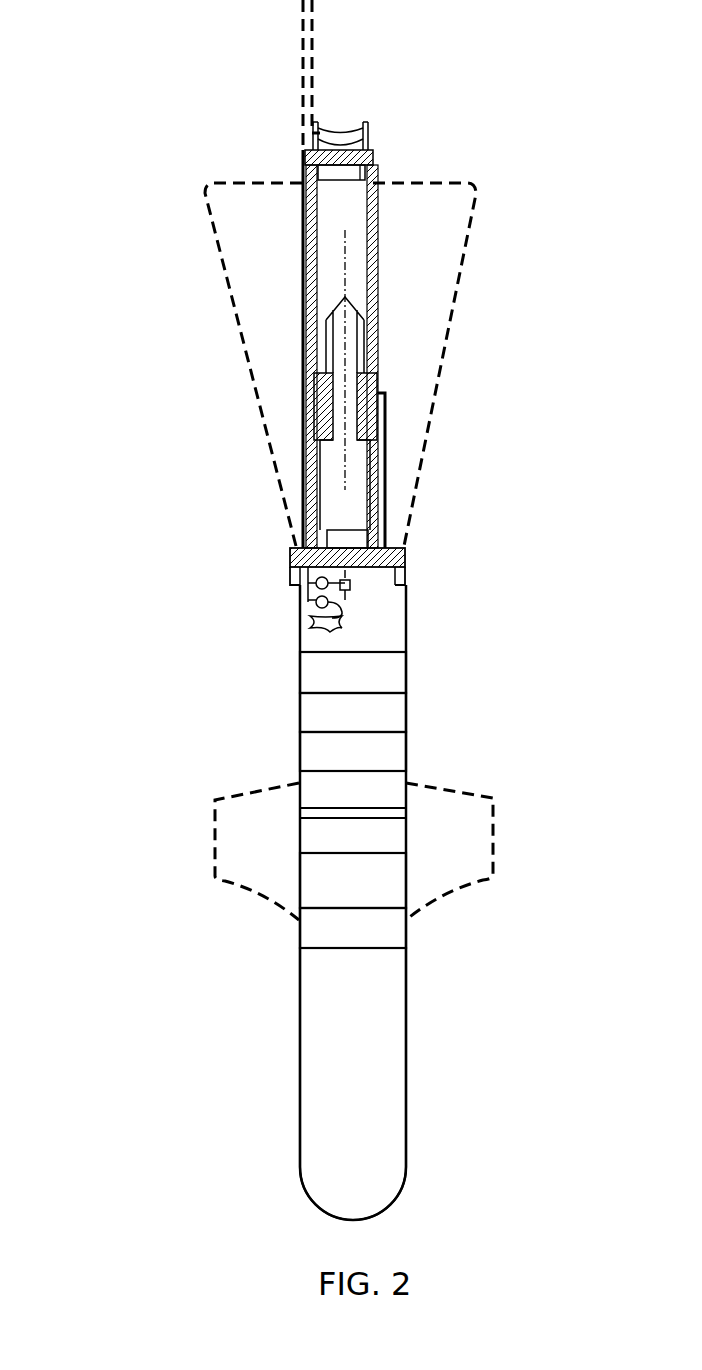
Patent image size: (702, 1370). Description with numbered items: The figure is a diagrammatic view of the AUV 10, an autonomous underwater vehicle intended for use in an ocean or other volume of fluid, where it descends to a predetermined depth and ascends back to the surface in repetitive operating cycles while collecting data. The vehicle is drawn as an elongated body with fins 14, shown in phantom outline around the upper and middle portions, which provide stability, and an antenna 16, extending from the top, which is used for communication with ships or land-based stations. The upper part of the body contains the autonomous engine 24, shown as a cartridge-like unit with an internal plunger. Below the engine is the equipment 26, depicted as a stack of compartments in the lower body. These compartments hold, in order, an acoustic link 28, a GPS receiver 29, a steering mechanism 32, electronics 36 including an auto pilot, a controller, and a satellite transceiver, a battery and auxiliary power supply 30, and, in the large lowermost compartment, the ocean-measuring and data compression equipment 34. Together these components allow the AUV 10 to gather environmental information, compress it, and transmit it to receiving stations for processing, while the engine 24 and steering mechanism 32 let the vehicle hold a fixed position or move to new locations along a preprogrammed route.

The AUV 10 is at (185, 570).
The fins 14 is at (443, 265).
The antenna 16 is at (306, 12).
The autonomous engine 24 is at (378, 213).
The equipment 26 is at (275, 902).
The acoustic link 28 is at (359, 691).
The GPS receiver 29 is at (359, 730).
The battery and auxiliary power supply 30 is at (359, 946).
The steering mechanism 32 is at (359, 768).
The ocean-measuring and data compression equipment 34 is at (353, 1084).
The electronics 36 is at (359, 896).